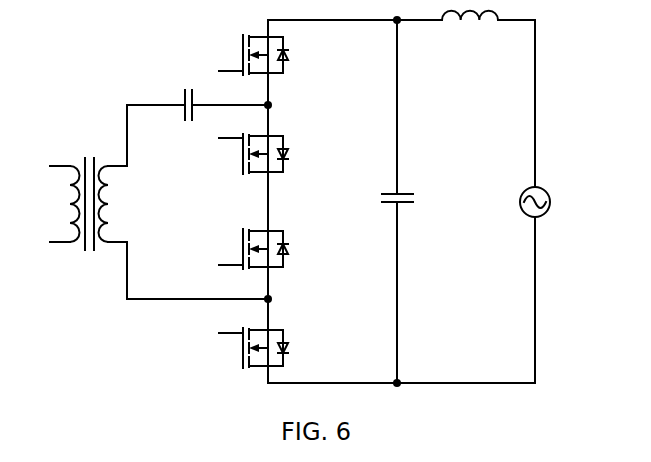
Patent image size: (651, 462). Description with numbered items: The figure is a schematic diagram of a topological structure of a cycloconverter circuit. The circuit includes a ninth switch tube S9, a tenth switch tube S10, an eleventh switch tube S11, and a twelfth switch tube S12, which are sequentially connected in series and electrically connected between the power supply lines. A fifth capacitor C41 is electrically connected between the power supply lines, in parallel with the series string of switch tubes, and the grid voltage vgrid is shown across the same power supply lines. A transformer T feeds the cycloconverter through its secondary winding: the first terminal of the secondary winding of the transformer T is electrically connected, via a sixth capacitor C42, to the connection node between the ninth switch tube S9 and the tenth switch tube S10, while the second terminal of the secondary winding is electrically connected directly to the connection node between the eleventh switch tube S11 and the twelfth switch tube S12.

The transformer T is at (88, 177).
The sixth capacitor C42 is at (159, 100).
The fifth capacitor C41 is at (408, 201).
The ninth switch tube S9 is at (247, 55).
The tenth switch tube S10 is at (246, 154).
The eleventh switch tube S11 is at (246, 249).
The twelfth switch tube S12 is at (246, 348).
The grid voltage source vgrid is at (555, 199).